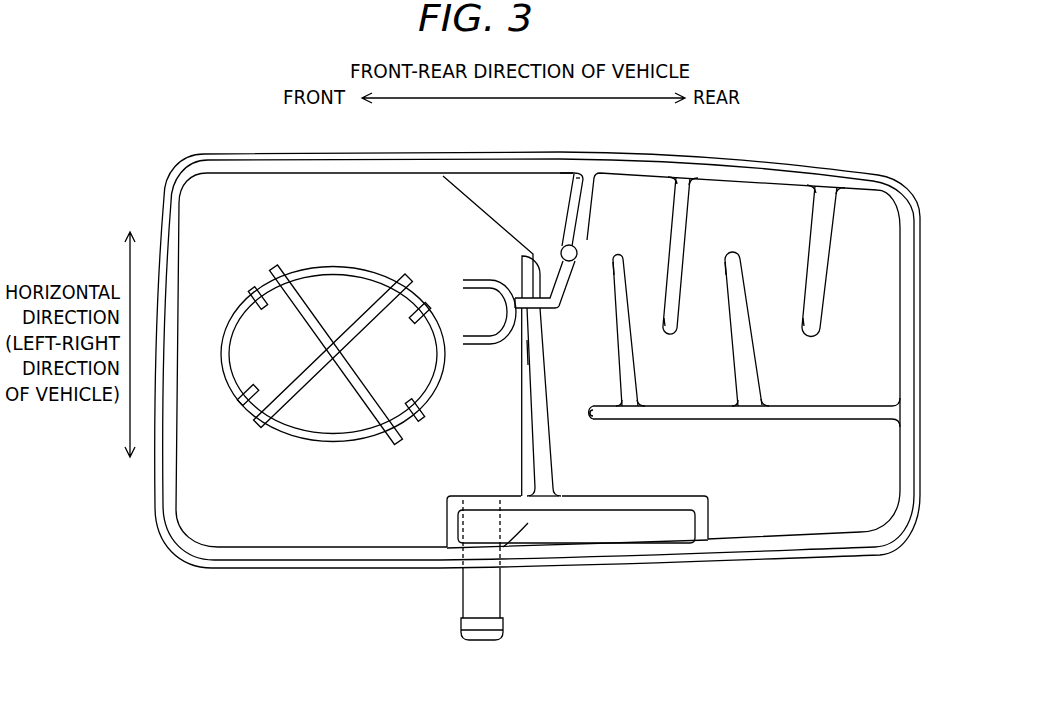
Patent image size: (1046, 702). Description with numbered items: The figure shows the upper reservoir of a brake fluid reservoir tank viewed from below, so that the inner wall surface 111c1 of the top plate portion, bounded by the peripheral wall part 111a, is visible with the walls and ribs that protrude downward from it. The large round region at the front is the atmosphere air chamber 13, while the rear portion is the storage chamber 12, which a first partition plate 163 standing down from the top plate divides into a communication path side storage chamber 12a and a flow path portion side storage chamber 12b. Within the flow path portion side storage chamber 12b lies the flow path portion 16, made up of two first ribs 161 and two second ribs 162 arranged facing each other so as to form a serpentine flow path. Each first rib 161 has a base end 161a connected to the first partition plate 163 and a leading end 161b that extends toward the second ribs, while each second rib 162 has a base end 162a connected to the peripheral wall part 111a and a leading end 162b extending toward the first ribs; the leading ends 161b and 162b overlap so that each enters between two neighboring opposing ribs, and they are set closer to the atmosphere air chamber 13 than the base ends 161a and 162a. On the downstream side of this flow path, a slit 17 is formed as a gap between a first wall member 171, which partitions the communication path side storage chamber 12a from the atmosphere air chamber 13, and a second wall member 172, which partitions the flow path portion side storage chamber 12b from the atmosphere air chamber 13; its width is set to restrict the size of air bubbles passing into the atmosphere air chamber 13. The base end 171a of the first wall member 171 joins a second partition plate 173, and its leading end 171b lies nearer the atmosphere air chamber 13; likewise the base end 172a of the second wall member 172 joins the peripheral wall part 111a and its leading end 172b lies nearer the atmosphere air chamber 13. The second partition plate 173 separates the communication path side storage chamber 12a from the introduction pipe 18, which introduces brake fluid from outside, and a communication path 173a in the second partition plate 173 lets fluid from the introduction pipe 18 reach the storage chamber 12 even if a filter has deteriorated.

The flow path portion 16 is at (861, 163).
The peripheral wall part 111a is at (742, 158).
The inner wall surface 111c1 is at (478, 188).
The atmosphere air chamber 13 is at (333, 314).
The storage chamber 12 is at (744, 402).
The communication path side storage chamber 12a is at (837, 454).
The flow path portion side storage chamber 12b is at (839, 351).
The first partition plate 163 is at (813, 406).
The second rib 162 is at (746, 256).
The base end 162a is at (668, 182).
The leading end 162b is at (662, 262).
The first rib 161 is at (657, 329).
The base end 161a is at (742, 403).
The leading end 161b is at (612, 310).
The slit 17 is at (559, 360).
The first wall member 171 is at (542, 402).
The base end 171a is at (553, 492).
The leading end 171b is at (527, 362).
The second wall member 172 is at (508, 240).
The base end 172a is at (583, 176).
The leading end 172b is at (486, 267).
The second partition plate 173 is at (559, 504).
The communication path 173a is at (473, 493).
The introduction pipe 18 is at (498, 600).